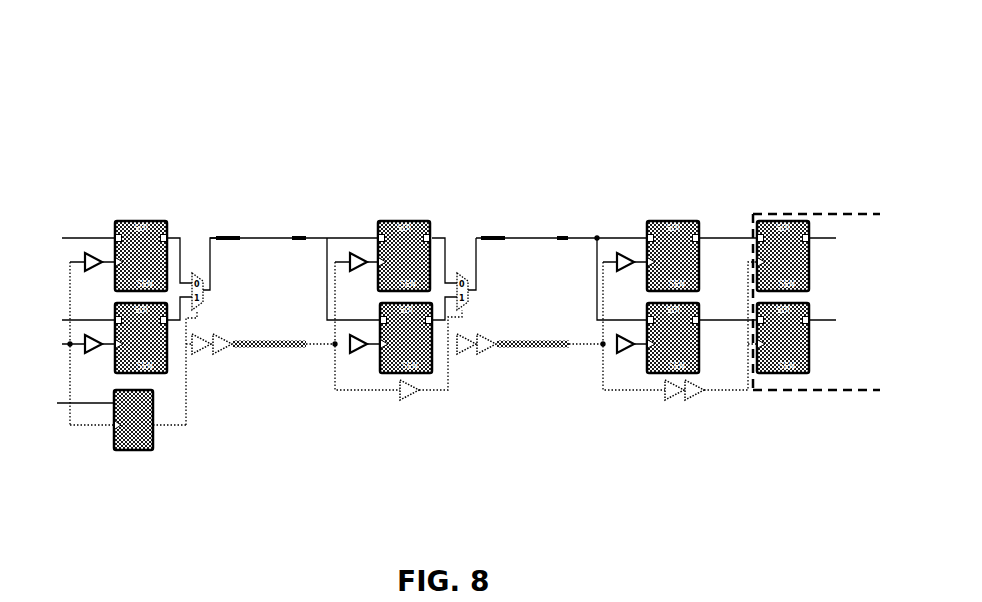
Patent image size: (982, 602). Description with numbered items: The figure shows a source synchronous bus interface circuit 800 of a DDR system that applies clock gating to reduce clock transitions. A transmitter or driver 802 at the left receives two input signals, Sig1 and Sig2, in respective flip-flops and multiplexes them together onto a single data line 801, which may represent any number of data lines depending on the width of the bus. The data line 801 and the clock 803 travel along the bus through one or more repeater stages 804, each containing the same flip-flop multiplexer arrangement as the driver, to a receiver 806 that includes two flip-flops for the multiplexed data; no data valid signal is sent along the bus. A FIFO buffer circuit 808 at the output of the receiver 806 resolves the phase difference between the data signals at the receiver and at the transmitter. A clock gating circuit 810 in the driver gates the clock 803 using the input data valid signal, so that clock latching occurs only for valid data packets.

The circuit 800 is at (150, 52).
The data line 801 is at (428, 206).
The transmitter (driver) 802 is at (118, 291).
The clock 803 is at (397, 362).
The repeater stage 804 is at (401, 279).
The receiver 806 is at (676, 279).
The FIFO buffer circuit 808 is at (816, 284).
The clock gating circuit 810 is at (105, 445).